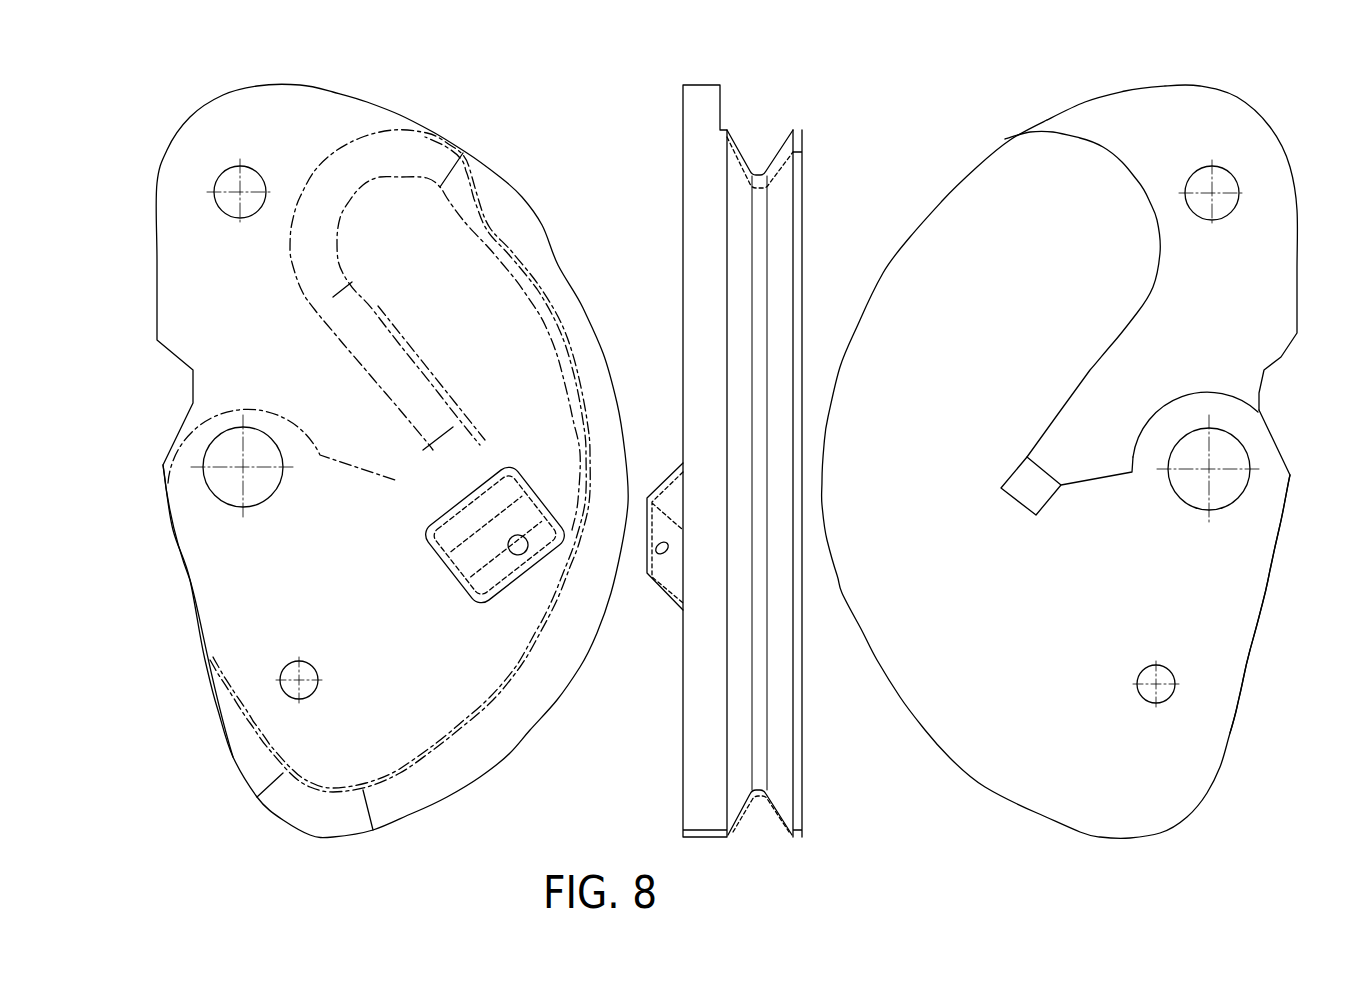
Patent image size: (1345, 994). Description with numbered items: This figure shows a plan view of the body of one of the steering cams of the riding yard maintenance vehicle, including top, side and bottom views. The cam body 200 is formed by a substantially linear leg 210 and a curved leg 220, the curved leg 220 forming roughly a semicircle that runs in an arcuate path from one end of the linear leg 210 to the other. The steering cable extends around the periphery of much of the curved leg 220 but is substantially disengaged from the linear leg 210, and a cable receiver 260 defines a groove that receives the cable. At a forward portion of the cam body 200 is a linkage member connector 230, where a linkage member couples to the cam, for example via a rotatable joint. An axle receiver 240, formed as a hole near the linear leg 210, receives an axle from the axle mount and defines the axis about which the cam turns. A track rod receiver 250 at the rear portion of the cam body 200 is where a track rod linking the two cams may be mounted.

The cam body 200 is at (317, 127).
The linear leg 210 is at (203, 653).
The curved leg 220 is at (504, 172).
The linkage member connector 230 is at (250, 177).
The axle receiver 240 is at (263, 495).
The track rod receiver 250 is at (305, 689).
The cable receiver 260 is at (763, 820).